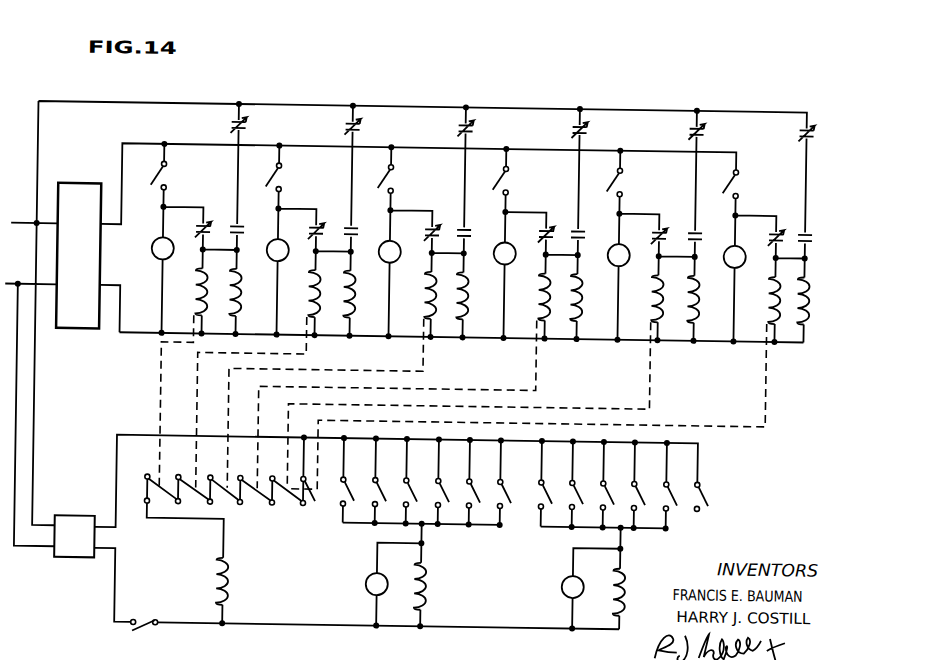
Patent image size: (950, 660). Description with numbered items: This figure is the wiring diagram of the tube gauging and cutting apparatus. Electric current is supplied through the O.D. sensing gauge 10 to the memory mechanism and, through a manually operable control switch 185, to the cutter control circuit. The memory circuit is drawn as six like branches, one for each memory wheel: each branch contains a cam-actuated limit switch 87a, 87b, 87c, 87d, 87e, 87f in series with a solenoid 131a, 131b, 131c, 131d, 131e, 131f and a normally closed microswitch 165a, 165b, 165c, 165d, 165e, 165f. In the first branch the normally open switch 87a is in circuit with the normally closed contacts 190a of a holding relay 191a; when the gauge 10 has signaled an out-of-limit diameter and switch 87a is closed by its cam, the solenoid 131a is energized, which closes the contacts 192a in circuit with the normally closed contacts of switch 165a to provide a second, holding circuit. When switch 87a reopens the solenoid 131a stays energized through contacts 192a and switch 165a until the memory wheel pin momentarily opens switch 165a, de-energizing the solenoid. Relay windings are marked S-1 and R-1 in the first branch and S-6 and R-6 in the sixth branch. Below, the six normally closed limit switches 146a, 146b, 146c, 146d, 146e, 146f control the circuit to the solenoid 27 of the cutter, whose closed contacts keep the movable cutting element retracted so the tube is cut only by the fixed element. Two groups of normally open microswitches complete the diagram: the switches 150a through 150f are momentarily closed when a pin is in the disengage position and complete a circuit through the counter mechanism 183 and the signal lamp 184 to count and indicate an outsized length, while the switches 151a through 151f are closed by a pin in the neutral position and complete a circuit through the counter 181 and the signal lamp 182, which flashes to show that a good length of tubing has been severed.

The O.D. sensing gauge 10 is at (87, 266).
The microswitch 165a is at (254, 123).
The microswitch 165b is at (369, 125).
The microswitch 165c is at (483, 126).
The microswitch 165d is at (595, 128).
The microswitch 165e is at (711, 130).
The microswitch 165f is at (789, 131).
The limit switch 87a is at (165, 173).
The limit switch 87b is at (280, 173).
The limit switch 87c is at (401, 172).
The limit switch 87d is at (507, 173).
The limit switch 87e is at (621, 173).
The limit switch 87f is at (737, 173).
The normally closed contacts of holding relay 190a is at (189, 225).
The contacts of holding relay 192a is at (249, 222).
The solenoid 131a is at (187, 296).
The solenoid 131b is at (302, 296).
The solenoid 131c is at (414, 296).
The solenoid 131d is at (529, 296).
The solenoid 131e is at (643, 296).
The solenoid 131f is at (759, 296).
The relay winding S-1 is at (187, 309).
The relay winding R-1 is at (242, 322).
The relay winding S-6 is at (763, 308).
The relay winding R-6 is at (816, 310).
The holding relay 191a is at (237, 332).
The limit switch 146a is at (149, 474).
The limit switch 146b is at (182, 501).
The limit switch 146c is at (213, 501).
The limit switch 146d is at (244, 501).
The limit switch 146e is at (276, 501).
The limit switch 146f is at (308, 500).
The microswitch 150a is at (347, 502).
The microswitch 150f is at (505, 502).
The microswitch 151a is at (546, 502).
The microswitch 151f is at (702, 502).
The solenoid 27 is at (232, 581).
The manually operable control switch 185 is at (147, 634).
The signal lamp 184 is at (370, 583).
The counter mechanism 183 is at (430, 582).
The signal lamp 182 is at (566, 580).
The counter 181 is at (633, 601).